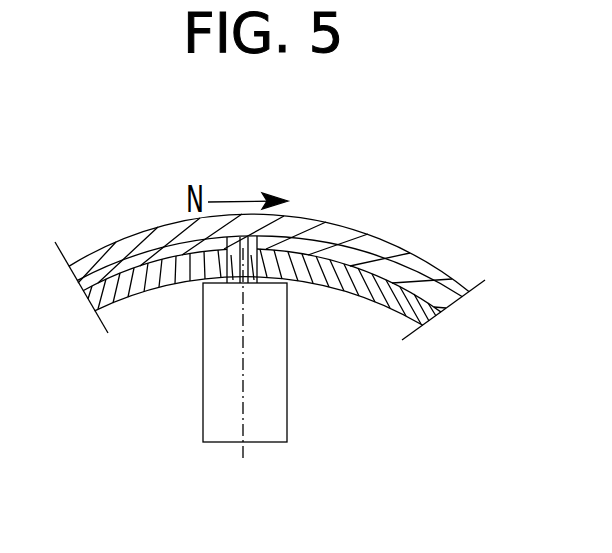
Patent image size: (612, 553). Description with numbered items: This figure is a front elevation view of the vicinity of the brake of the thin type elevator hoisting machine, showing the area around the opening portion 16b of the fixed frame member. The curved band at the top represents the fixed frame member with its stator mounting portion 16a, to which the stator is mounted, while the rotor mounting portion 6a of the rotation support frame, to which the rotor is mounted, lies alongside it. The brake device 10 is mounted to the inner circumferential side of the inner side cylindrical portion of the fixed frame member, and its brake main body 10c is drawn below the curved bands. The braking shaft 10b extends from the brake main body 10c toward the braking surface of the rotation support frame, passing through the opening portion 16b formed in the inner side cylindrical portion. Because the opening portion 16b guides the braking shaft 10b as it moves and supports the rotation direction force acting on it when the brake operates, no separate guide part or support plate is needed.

The rotor mounting portion 6a is at (364, 240).
The stator mounting portion 16a is at (423, 257).
The opening portion 16b is at (165, 232).
The brake device 10 is at (212, 403).
The braking shaft 10b is at (243, 262).
The brake main body 10c is at (268, 356).